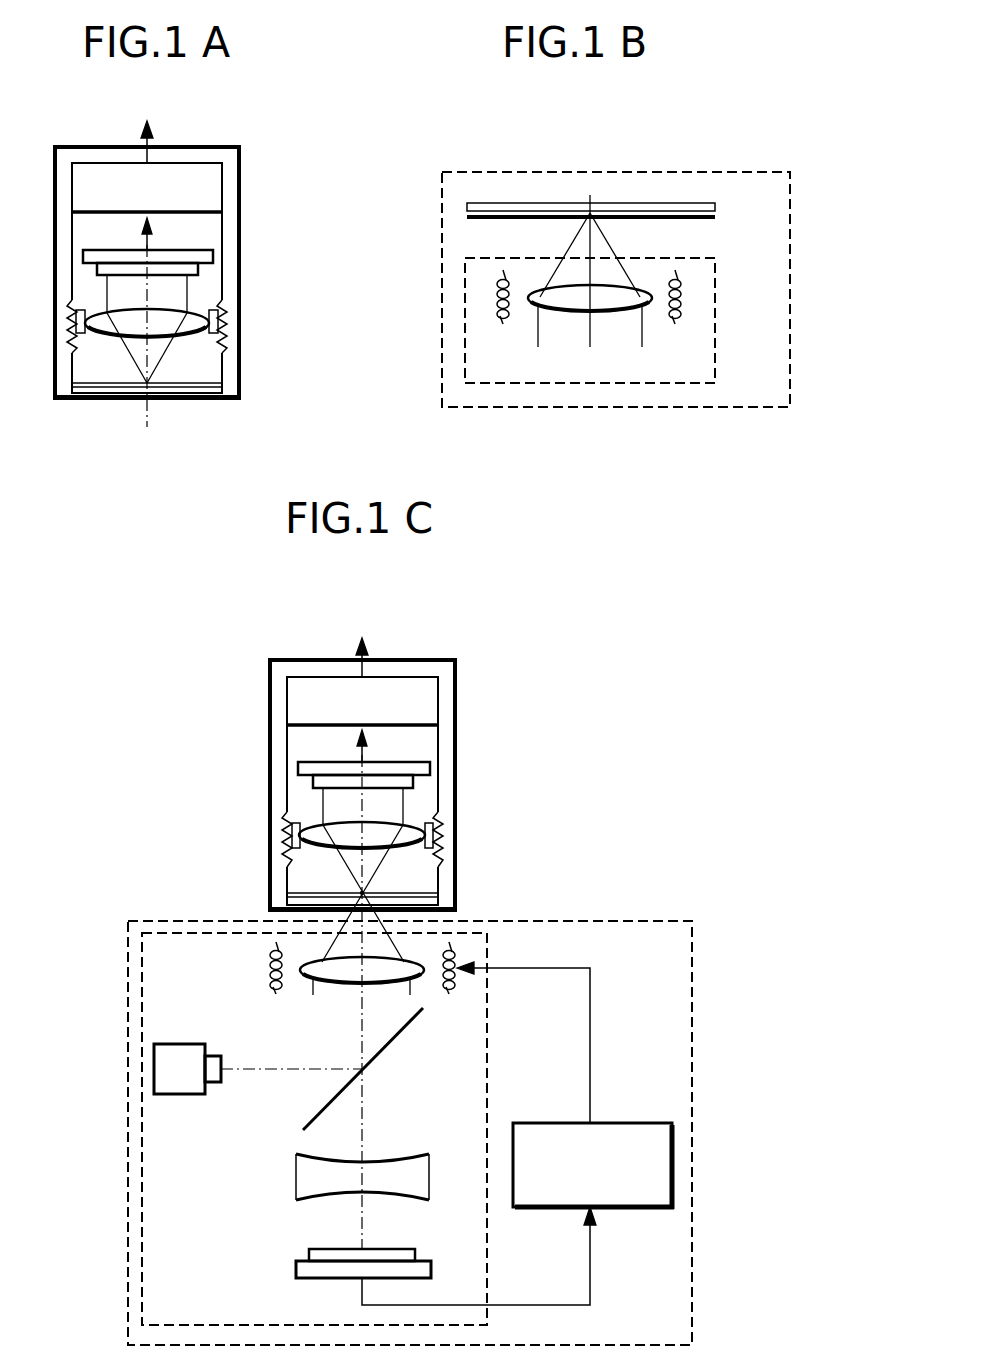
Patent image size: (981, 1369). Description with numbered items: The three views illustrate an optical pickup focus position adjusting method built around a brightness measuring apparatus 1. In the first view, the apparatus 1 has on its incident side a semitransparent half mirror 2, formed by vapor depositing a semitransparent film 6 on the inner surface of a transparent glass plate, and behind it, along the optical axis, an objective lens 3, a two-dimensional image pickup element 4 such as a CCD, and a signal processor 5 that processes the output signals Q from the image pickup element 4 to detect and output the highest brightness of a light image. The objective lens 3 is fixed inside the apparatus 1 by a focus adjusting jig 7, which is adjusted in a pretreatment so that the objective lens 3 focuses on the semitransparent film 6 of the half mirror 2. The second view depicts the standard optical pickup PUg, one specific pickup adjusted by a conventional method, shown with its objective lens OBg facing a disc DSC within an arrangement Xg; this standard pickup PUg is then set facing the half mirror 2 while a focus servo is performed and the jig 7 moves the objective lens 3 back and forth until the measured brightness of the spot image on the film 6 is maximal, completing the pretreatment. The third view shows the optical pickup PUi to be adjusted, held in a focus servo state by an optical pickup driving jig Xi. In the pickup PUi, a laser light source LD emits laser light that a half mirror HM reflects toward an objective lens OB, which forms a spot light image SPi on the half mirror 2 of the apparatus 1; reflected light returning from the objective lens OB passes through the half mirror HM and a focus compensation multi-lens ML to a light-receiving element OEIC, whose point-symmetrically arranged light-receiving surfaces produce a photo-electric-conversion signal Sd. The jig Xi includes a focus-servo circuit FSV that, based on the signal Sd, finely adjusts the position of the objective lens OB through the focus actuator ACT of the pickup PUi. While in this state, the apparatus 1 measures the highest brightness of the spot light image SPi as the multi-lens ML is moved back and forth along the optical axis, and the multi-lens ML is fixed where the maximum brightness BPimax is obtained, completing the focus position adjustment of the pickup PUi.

In FIG. 1A, the brightness measuring apparatus 1 is at (55, 186).
In FIG. 1C, the brightness measuring apparatus 1 is at (270, 698).
In FIG. 1A, the half mirror 2 is at (103, 392).
In FIG. 1C, the half mirror 2 is at (290, 902).
In FIG. 1A, the objective lens 3 is at (190, 315).
In FIG. 1C, the objective lens 3 is at (405, 822).
In FIG. 1A, the two-dimensional image pickup element 4 is at (205, 257).
In FIG. 1C, the two-dimensional image pickup element 4 is at (420, 770).
In FIG. 1A, the signal processor 5 is at (218, 182).
In FIG. 1C, the signal processor 5 is at (438, 684).
In FIG. 1A, the semitransparent film 6 is at (85, 378).
In FIG. 1C, the semitransparent film 6 is at (300, 890).
In FIG. 1A, the focus adjusting jig 7 is at (222, 318).
In FIG. 1C, the focus adjusting jig 7 is at (440, 831).
In FIG. 1A, the detection signal Q is at (145, 243).
In FIG. 1C, the detection signal Q is at (360, 757).
In FIG. 1C, the maximum brightness BPimax is at (361, 645).
In FIG. 1B, the optical disc DSC is at (676, 205).
In FIG. 1B, the reference drive Xg is at (790, 210).
In FIG. 1B, the standard optical pickup PUg is at (717, 292).
In FIG. 1B, the reference objective lens OBg is at (645, 300).
In FIG. 1C, the spot light image SPi is at (362, 893).
In FIG. 1C, the optical pickup driving jig Xi is at (628, 920).
In FIG. 1C, the optical pickup PUi is at (487, 1083).
In FIG. 1C, the objective lens OB is at (330, 983).
In FIG. 1C, the focus actuator ACT is at (455, 992).
In FIG. 1C, the laser light source LD is at (178, 1043).
In FIG. 1C, the half mirror HM is at (305, 1122).
In FIG. 1C, the focus compensation multi-lens ML is at (296, 1180).
In FIG. 1C, the light-receiving element OEIC is at (296, 1270).
In FIG. 1C, the focus-servo circuit FSV is at (636, 1123).
In FIG. 1C, the photo-electric-conversion signal Sd is at (528, 1303).